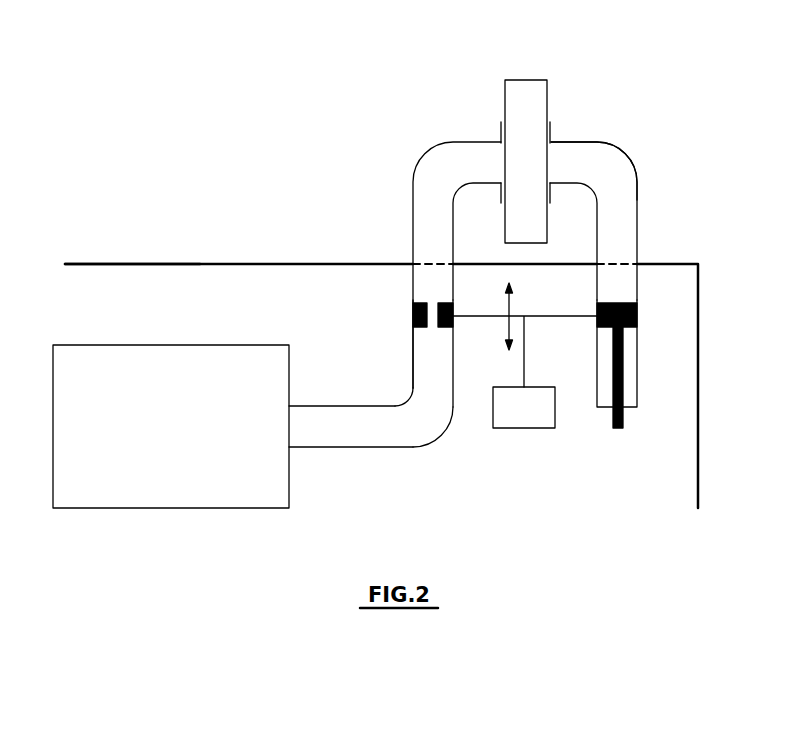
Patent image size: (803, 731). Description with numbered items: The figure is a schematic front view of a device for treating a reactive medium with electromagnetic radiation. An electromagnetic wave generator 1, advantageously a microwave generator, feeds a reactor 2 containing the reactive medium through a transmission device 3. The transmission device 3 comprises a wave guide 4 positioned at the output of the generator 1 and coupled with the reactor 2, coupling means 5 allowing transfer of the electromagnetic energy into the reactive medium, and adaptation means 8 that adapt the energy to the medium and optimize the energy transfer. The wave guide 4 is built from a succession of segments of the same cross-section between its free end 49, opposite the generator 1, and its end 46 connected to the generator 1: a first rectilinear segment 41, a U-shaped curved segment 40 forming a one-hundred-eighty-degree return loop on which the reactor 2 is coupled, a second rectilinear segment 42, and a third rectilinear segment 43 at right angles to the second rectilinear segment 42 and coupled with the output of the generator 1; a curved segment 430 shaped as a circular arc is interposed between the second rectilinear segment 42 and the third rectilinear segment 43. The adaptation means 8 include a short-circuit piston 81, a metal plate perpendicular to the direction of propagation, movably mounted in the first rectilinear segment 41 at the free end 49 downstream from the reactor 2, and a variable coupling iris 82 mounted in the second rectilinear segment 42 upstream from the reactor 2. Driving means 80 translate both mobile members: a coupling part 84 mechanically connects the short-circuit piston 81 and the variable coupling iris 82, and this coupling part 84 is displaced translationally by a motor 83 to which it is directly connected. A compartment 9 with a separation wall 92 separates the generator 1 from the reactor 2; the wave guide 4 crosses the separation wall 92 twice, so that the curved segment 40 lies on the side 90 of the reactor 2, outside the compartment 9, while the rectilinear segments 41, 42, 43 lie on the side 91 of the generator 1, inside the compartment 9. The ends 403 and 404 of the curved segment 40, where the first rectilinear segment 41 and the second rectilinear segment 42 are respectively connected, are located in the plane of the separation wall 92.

The electromagnetic wave generator 1 is at (171, 426).
The reactor 2 is at (527, 80).
The transmission device 3 is at (343, 165).
The wave guide 4 is at (393, 138).
The coupling means 5 is at (568, 105).
The adaptation means 8 is at (543, 465).
The compartment 9 is at (263, 262).
The curved segment 40 is at (620, 145).
The first rectilinear segment 41 is at (637, 338).
The second rectilinear segment 42 is at (413, 355).
The third rectilinear segment 43 is at (358, 448).
The end connected to the generator 46 is at (292, 424).
The free end 49 is at (620, 407).
The driving means 80 is at (560, 350).
The short-circuit piston 81 is at (637, 315).
The variable coupling iris 82 is at (413, 312).
The motor 83 is at (524, 355).
The coupling part 84 is at (540, 316).
The side of the reactor 90 is at (172, 243).
The side of the generator 91 is at (172, 295).
The separation wall 92 is at (102, 262).
The end of the curved segment 403 is at (622, 263).
The end of the curved segment 404 is at (423, 263).
The curved segment at right angles 430 is at (438, 440).